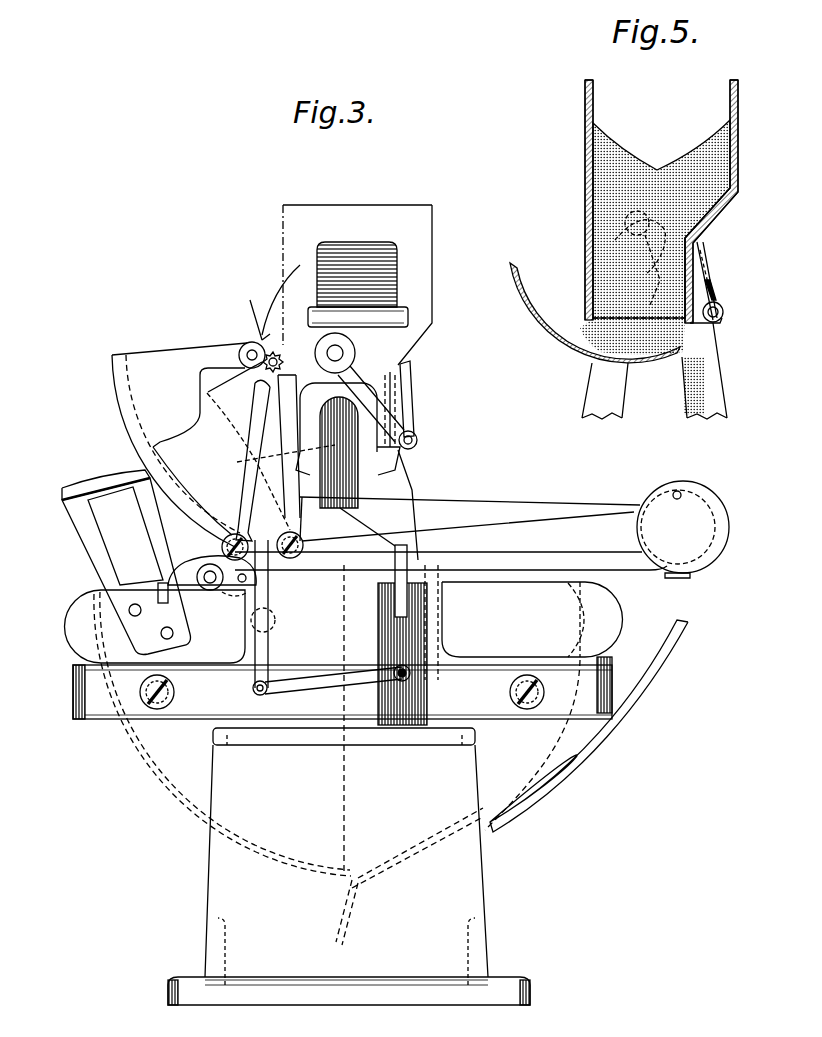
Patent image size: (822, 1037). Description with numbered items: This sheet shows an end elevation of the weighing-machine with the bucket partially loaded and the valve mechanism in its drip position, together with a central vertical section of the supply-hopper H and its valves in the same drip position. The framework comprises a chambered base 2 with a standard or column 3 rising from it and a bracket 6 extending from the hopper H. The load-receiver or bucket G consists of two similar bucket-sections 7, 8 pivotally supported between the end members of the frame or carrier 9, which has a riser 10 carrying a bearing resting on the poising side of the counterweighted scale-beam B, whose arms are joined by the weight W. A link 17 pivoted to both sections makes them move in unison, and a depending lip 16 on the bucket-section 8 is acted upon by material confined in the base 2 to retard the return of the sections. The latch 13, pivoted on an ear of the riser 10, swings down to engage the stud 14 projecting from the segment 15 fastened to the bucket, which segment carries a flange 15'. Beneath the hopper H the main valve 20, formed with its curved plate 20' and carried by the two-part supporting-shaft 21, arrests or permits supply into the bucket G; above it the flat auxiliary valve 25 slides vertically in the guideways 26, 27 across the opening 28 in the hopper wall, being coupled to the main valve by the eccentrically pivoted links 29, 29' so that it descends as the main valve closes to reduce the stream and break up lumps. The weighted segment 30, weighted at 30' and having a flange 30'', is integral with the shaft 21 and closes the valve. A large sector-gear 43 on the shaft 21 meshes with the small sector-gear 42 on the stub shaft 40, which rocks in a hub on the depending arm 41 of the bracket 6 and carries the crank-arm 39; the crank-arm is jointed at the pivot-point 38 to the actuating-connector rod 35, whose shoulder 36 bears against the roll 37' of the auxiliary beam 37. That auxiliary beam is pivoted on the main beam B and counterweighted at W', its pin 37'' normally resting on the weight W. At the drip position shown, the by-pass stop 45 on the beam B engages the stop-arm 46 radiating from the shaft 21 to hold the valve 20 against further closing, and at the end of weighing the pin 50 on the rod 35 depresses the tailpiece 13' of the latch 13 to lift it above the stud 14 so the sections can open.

In FIG. 3, the chambered base 2 is at (480, 890).
In FIG. 3, the standard or column 3 is at (403, 478).
In FIG. 5, the standard or column 3 is at (603, 380).
In FIG. 3, the bracket 6 is at (335, 258).
In FIG. 3, the bucket-section 7 is at (168, 762).
In FIG. 3, the bucket-section 8 is at (568, 625).
In FIG. 3, the frame or carrier 9 is at (102, 708).
In FIG. 3, the riser 10 is at (434, 594).
In FIG. 3, the latch 13 is at (212, 563).
In FIG. 3, the tailpiece 13' is at (226, 604).
In FIG. 3, the stud 14 is at (158, 592).
In FIG. 3, the segment 15 is at (118, 566).
In FIG. 3, the flange 15' is at (106, 477).
In FIG. 3, the lip 16 is at (340, 915).
In FIG. 3, the link 17 is at (378, 690).
In FIG. 3, the main valve 20 is at (230, 357).
In FIG. 5, the main valve 20 is at (597, 293).
In FIG. 3, the curved plate 20' is at (248, 461).
In FIG. 5, the curved plate 20' is at (672, 386).
In FIG. 3, the two-part supporting-shaft 21 is at (355, 352).
In FIG. 5, the two-part supporting-shaft 21 is at (625, 212).
In FIG. 3, the auxiliary valve 25 is at (408, 402).
In FIG. 5, the auxiliary valve 25 is at (708, 290).
In FIG. 3, the guideway 26 is at (396, 386).
In FIG. 5, the guideway 27 is at (702, 244).
In FIG. 5, the opening 28 is at (705, 266).
In FIG. 3, the link 29 is at (420, 425).
In FIG. 5, the link 29' is at (605, 270).
In FIG. 3, the weighted segment 30 is at (179, 438).
In FIG. 3, the weight 30' is at (199, 414).
In FIG. 3, the flange 30'' is at (183, 444).
In FIG. 3, the actuating-connector 35 is at (257, 482).
In FIG. 3, the offset or shoulder 36 is at (243, 518).
In FIG. 3, the auxiliary beam 37 is at (470, 509).
In FIG. 3, the projection or roll 37' is at (341, 524).
In FIG. 3, the pin 37'' is at (660, 480).
In FIG. 3, the joint or pivot-point 38 is at (258, 380).
In FIG. 3, the crank-arm 39 is at (277, 350).
In FIG. 3, the stub shaft 40 is at (248, 343).
In FIG. 3, the depending arm 41 is at (298, 285).
In FIG. 3, the toothed segment or sector-gear 42 is at (249, 311).
In FIG. 3, the toothed segment or sector-gear 43 is at (358, 317).
In FIG. 3, the by-pass stop 45 is at (340, 510).
In FIG. 3, the stop-arm 46 is at (273, 458).
In FIG. 3, the pin 50 is at (270, 581).
In FIG. 3, the scale-beam B is at (557, 508).
In FIG. 3, the load-receiver or bucket G is at (344, 622).
In FIG. 3, the supply-hopper H is at (432, 236).
In FIG. 5, the supply-hopper H is at (585, 113).
In FIG. 3, the weight W is at (689, 529).
In FIG. 3, the counterweight W' is at (678, 513).